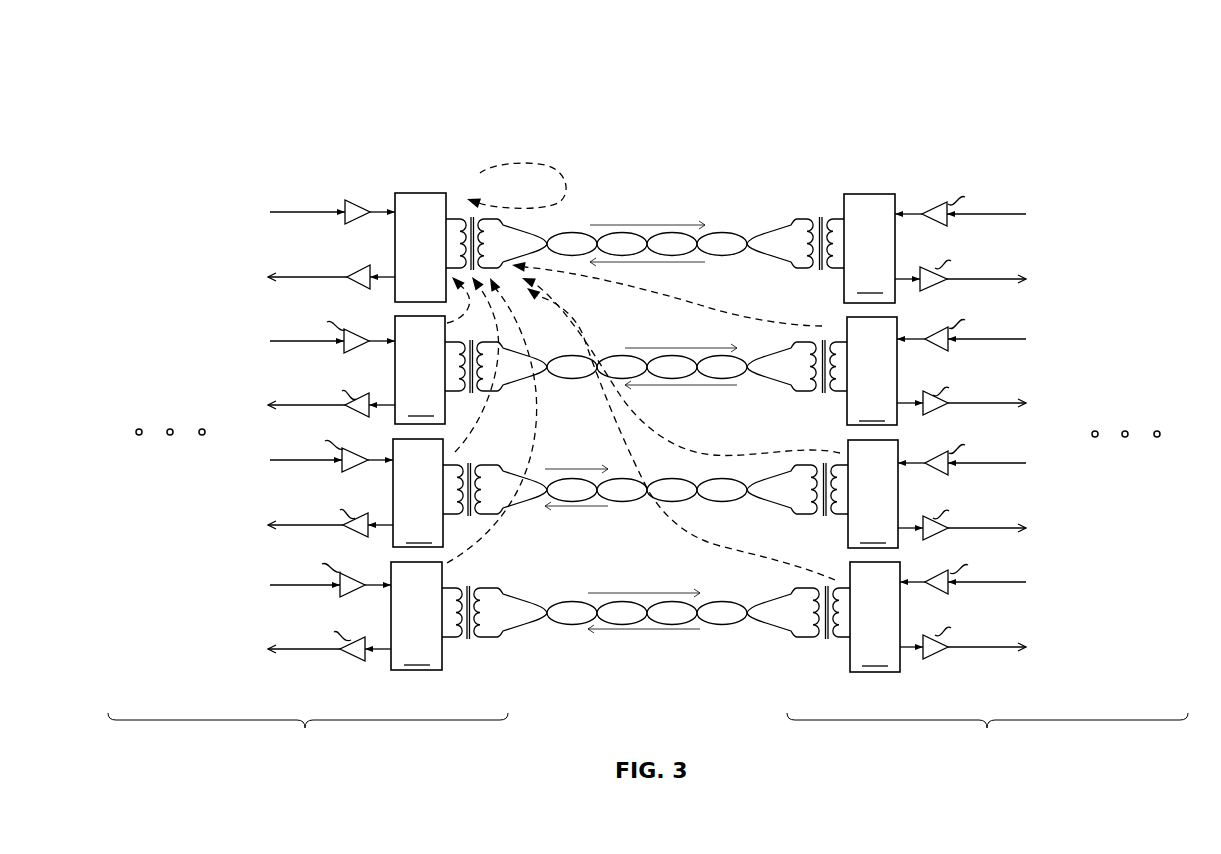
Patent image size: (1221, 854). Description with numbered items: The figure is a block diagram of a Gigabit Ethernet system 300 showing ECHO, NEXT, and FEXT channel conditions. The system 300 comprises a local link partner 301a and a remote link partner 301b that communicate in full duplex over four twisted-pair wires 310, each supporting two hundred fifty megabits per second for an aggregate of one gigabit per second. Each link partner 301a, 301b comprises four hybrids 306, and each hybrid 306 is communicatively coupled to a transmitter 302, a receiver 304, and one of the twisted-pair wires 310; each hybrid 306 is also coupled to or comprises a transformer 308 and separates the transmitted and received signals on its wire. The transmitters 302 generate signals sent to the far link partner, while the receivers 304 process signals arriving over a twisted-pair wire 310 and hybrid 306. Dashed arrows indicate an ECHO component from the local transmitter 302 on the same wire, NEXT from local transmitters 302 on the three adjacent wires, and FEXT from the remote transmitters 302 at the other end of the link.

The Gigabit Ethernet system 300 is at (331, 86).
The local link partner 301a is at (450, 720).
The remote link partner 301b is at (952, 720).
The transmitter 302 is at (346, 204).
The receiver 304 is at (357, 269).
The hybrid 306 is at (434, 293).
The transformer 308 is at (810, 207).
The twisted-pair wire 310 is at (577, 216).